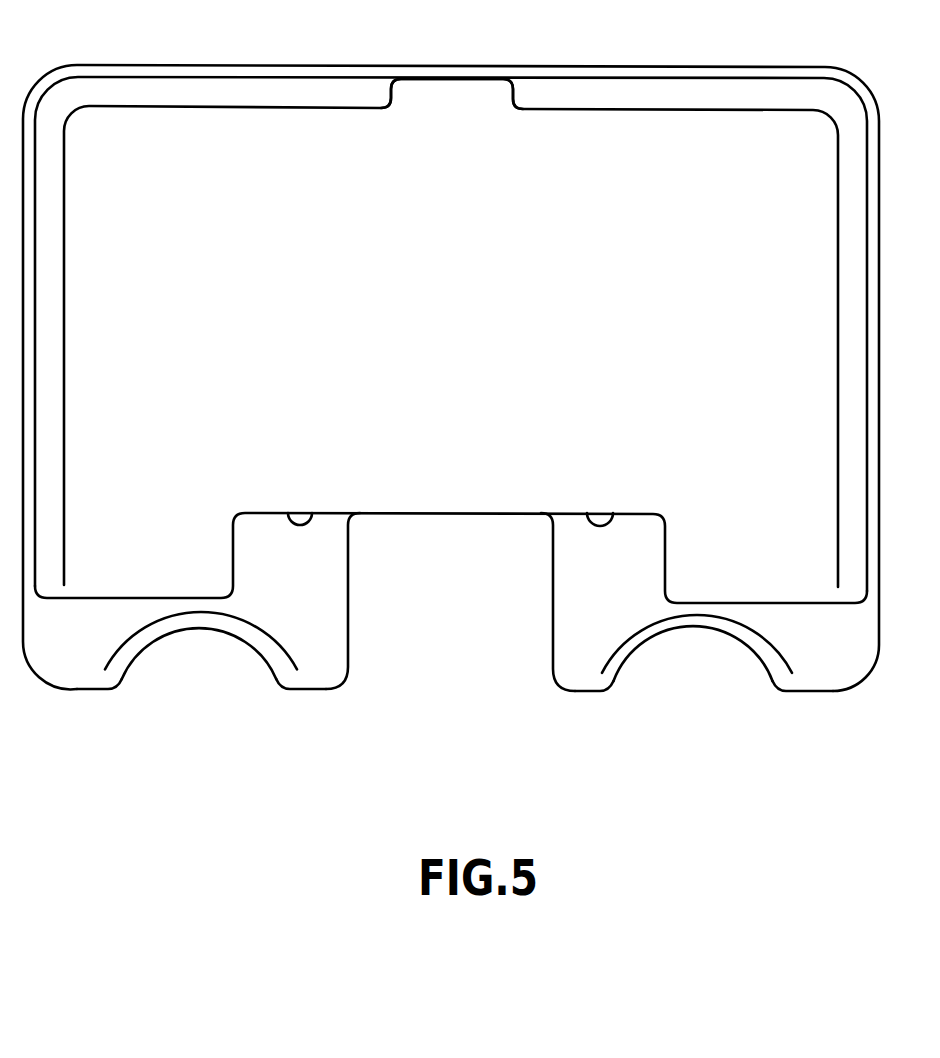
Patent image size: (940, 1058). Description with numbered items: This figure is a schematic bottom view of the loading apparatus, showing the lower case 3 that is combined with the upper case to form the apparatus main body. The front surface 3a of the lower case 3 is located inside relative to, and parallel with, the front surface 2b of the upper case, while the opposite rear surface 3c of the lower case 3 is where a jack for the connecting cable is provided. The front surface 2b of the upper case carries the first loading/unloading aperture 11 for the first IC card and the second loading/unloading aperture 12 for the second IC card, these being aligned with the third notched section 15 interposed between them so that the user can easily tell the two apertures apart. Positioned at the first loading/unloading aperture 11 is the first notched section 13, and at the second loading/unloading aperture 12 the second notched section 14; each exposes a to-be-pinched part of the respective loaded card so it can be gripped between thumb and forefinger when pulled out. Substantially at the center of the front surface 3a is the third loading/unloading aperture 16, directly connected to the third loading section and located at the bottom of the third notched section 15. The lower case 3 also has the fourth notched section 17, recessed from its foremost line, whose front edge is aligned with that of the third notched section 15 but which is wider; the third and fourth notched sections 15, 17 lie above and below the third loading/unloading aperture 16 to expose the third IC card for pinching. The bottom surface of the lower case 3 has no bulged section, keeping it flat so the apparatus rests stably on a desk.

The lower case 3 is at (810, 192).
The front surface of the lower case 3a is at (791, 604).
The rear surface of the lower case 3c is at (640, 65).
The front surface of the upper case 2b is at (303, 690).
The first loading/unloading aperture 11 is at (93, 690).
The second loading/unloading aperture 12 is at (801, 692).
The first notched section 13 is at (187, 637).
The second notched section 14 is at (727, 640).
The third notched section 15 is at (548, 578).
The third loading/unloading aperture 16 is at (297, 511).
The fourth notched section 17 is at (606, 511).